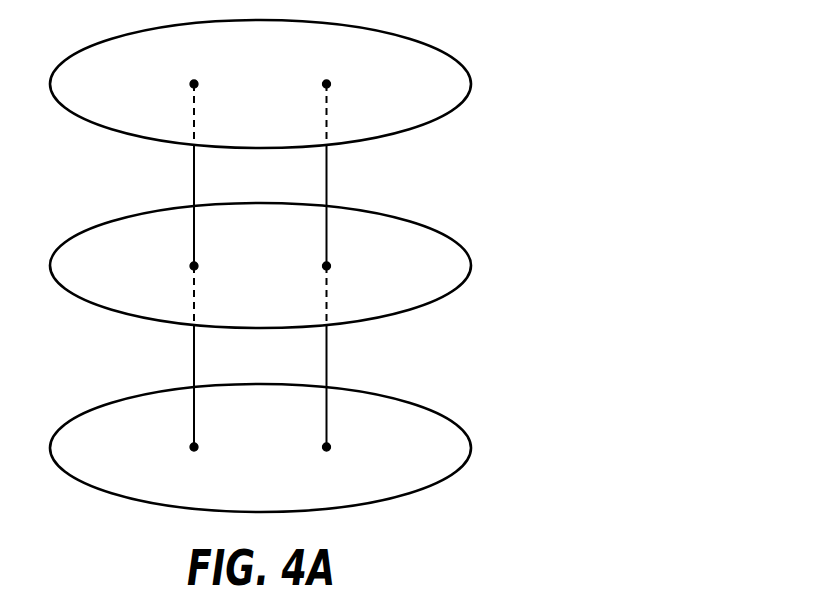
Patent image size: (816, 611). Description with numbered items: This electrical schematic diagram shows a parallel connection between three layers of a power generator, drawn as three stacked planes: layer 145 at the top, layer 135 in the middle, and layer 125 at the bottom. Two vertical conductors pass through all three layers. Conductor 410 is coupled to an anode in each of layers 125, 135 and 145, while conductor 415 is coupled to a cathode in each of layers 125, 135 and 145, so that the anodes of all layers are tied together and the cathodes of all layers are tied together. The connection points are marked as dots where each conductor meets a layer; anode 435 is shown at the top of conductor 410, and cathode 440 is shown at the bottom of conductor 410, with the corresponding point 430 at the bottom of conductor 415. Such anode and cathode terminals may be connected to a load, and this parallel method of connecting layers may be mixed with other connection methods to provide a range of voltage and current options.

The layer 145 is at (412, 57).
The layer 135 is at (412, 238).
The layer 125 is at (412, 420).
The conductor 410 is at (197, 178).
The conductor 415 is at (330, 178).
The anode 435 is at (190, 84).
The cathode 440 is at (190, 447).
The lower node of second line 430 is at (330, 447).